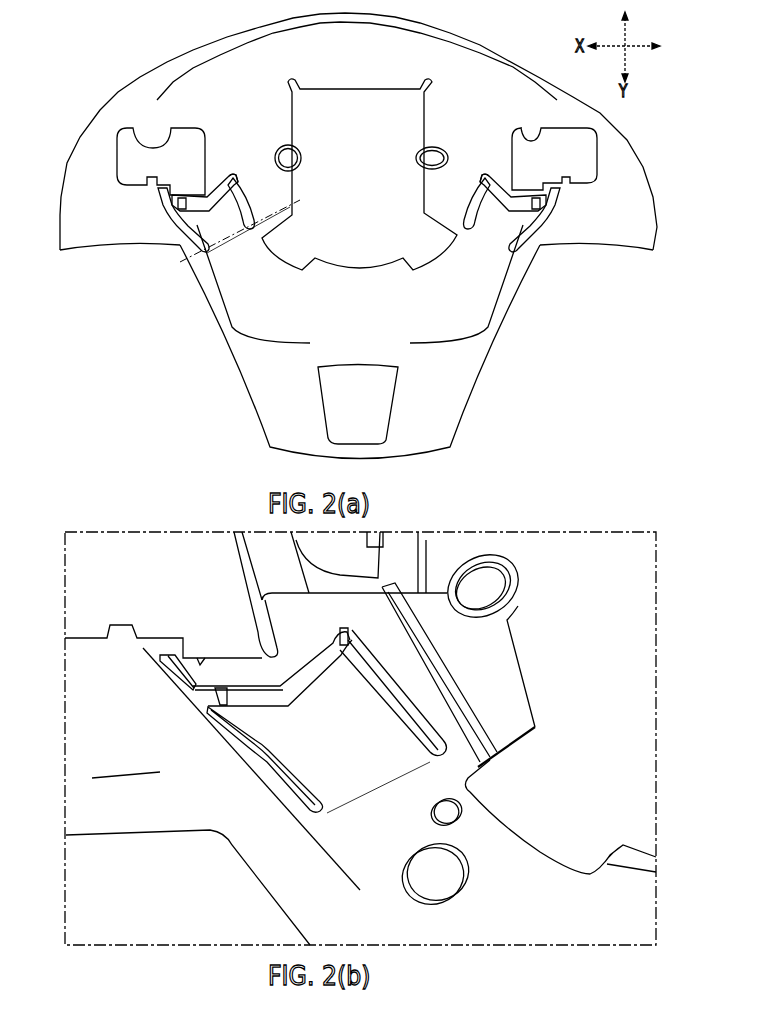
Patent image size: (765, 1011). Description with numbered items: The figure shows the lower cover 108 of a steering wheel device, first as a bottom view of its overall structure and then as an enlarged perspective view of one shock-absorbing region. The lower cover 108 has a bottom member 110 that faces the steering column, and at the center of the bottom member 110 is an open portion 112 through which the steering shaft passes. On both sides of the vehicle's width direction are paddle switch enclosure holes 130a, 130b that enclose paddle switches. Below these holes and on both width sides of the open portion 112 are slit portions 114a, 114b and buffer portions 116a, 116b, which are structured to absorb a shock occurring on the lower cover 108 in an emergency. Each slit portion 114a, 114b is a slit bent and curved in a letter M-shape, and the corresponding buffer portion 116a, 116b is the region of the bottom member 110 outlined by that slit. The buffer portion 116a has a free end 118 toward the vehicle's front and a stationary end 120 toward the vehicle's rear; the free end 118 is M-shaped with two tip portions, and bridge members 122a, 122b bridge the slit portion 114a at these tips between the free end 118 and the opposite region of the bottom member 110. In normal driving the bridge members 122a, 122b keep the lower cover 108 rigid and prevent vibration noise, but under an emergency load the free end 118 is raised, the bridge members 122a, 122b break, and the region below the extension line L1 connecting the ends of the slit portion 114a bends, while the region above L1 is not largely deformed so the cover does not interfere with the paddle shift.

In FIG. 2A, the lower cover 108 is at (138, 60).
In FIG. 2B, the lower cover 108 is at (596, 602).
In FIG. 2A, the bottom member 110 is at (215, 78).
In FIG. 2B, the bottom member 110 is at (500, 637).
In FIG. 2A, the open portion 112 is at (296, 192).
In FIG. 2B, the open portion 112 is at (523, 677).
In FIG. 2A, the slit portion 114a is at (244, 190).
In FIG. 2B, the slit portion 114a is at (396, 688).
In FIG. 2A, the slit portion 114b is at (475, 180).
In FIG. 2A, the buffer portion 116a is at (207, 232).
In FIG. 2B, the buffer portion 116a is at (313, 775).
In FIG. 2A, the buffer portion 116b is at (511, 232).
In FIG. 2A, the free end 118 is at (201, 208).
In FIG. 2B, the free end 118 is at (282, 707).
In FIG. 2A, the stationary end 120 is at (232, 245).
In FIG. 2B, the stationary end 120 is at (382, 790).
In FIG. 2A, the bridge member 122a is at (230, 176).
In FIG. 2B, the bridge member 122a is at (335, 645).
In FIG. 2A, the bridge member 122b is at (178, 204).
In FIG. 2B, the bridge member 122b is at (215, 698).
In FIG. 2A, the paddle switch enclosure hole 130a is at (150, 148).
In FIG. 2B, the paddle switch enclosure hole 130a is at (253, 575).
In FIG. 2A, the paddle switch enclosure hole 130b is at (530, 145).
In FIG. 2A, the extension line L1 is at (292, 212).